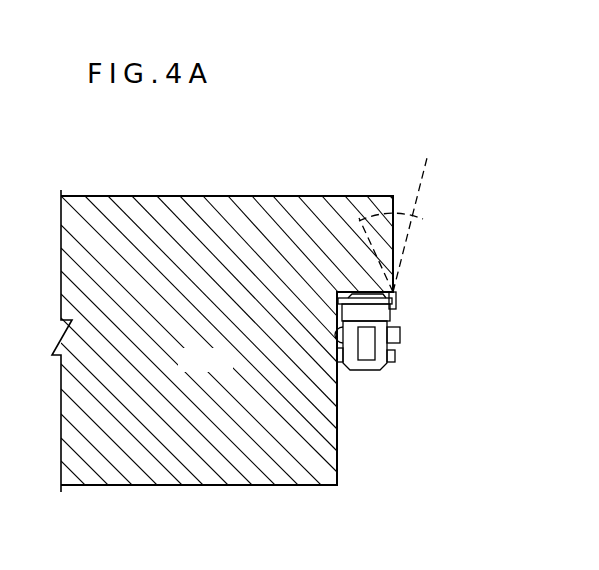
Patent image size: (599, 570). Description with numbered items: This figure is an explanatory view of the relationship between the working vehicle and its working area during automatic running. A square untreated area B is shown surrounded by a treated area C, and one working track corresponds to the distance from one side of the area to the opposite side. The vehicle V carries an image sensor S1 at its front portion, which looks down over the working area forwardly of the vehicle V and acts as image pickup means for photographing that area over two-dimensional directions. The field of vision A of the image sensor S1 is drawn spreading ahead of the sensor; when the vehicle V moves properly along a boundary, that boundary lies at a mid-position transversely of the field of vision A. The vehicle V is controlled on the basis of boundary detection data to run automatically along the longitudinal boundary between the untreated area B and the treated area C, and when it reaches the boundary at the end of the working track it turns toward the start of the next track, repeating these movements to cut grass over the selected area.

The untreated area B is at (222, 341).
The treated area C is at (481, 360).
The vehicle V is at (373, 386).
The image sensor S1 is at (397, 300).
The field of vision A is at (416, 214).